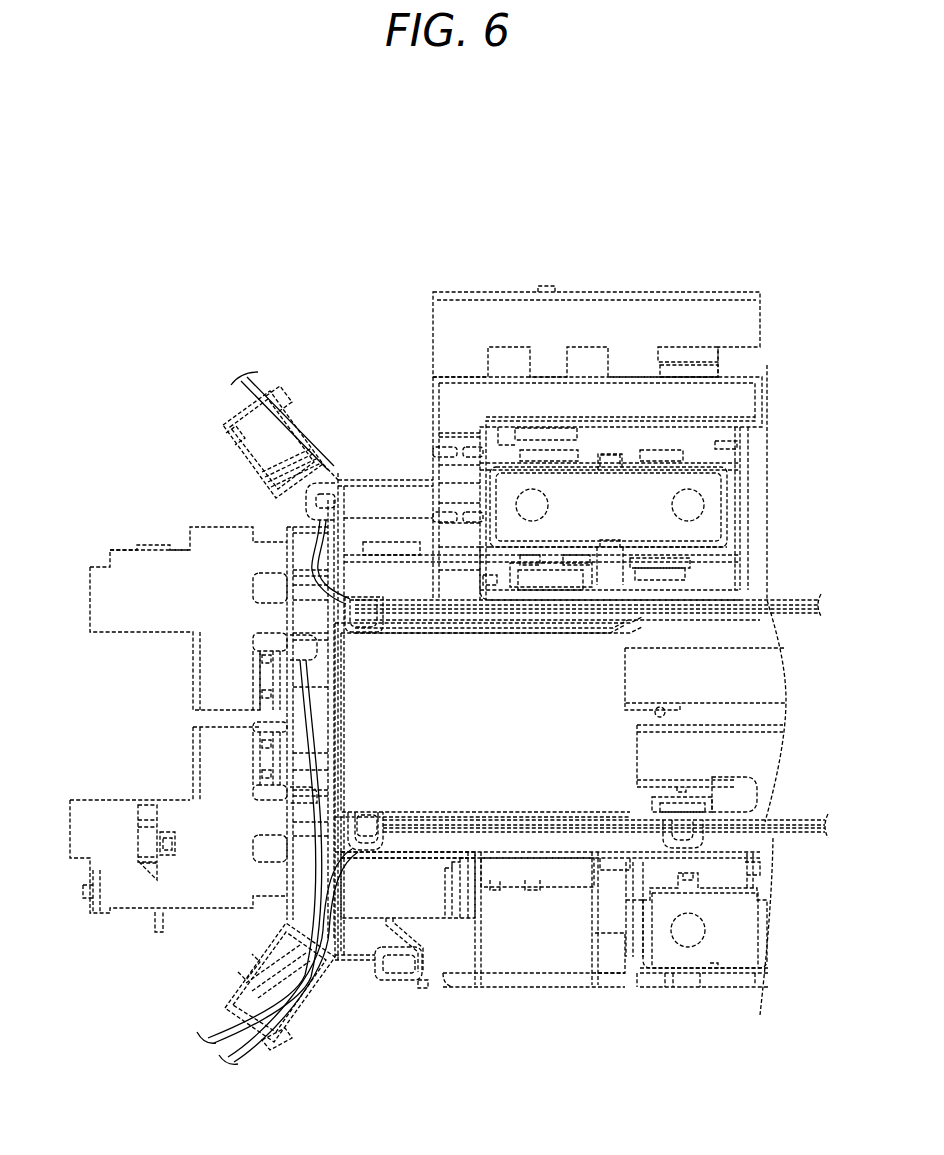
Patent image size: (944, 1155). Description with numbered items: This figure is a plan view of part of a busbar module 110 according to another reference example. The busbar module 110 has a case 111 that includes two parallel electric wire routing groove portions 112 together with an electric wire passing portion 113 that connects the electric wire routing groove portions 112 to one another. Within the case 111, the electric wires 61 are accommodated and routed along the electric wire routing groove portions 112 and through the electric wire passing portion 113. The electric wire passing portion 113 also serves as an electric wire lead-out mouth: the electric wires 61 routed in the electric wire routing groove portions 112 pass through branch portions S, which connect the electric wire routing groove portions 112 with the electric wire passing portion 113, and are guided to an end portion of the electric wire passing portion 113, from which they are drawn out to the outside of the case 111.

The busbar module 110 is at (657, 272).
The case 111 is at (611, 988).
The electric wire routing groove portion 112 is at (713, 597).
The electric wire passing portion 113 is at (300, 747).
The electric wire 61 is at (778, 598).
The branch portion S is at (303, 593).